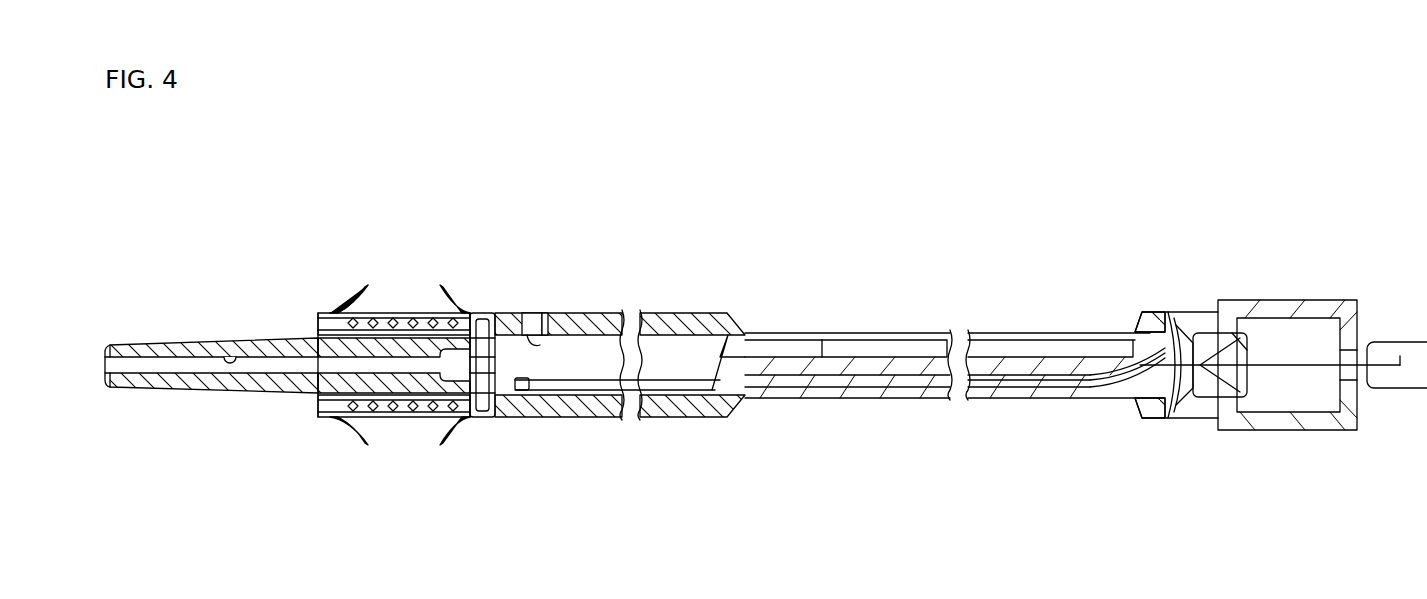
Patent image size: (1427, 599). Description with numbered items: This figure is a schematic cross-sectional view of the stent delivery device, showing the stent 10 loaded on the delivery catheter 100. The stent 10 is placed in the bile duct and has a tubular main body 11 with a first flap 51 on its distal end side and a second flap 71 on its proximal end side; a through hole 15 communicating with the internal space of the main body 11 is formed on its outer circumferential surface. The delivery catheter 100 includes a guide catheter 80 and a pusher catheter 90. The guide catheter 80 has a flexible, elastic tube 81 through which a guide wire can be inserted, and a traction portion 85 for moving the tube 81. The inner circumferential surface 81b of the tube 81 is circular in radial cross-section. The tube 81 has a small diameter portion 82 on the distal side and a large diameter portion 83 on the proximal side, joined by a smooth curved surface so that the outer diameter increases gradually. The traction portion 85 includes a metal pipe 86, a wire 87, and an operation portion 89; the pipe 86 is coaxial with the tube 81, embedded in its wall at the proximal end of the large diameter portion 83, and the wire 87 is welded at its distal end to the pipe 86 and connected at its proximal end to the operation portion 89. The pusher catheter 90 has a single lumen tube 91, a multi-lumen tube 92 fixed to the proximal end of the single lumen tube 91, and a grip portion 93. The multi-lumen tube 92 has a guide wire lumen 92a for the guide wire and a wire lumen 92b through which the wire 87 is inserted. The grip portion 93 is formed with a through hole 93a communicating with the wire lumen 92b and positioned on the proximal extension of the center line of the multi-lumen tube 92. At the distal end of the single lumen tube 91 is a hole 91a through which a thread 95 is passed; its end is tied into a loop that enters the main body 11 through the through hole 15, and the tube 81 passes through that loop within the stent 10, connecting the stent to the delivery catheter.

The delivery catheter 100 is at (852, 281).
The stent 10 is at (430, 443).
The main body 11 is at (404, 312).
The through hole 15 is at (477, 298).
The first flap 51 is at (345, 300).
The second flap 71 is at (462, 286).
The guide catheter 80 is at (170, 420).
The tube 81 is at (166, 344).
The inner circumferential surface 81b is at (233, 352).
The small diameter portion 82 is at (232, 398).
The large diameter portion 83 is at (386, 418).
The pipe 86 is at (426, 420).
The wire 87 is at (598, 398).
The pusher catheter 90 is at (750, 416).
The single lumen tube 91 is at (668, 314).
The hole 91a is at (548, 318).
The multi-lumen tube 92 is at (1013, 332).
The guide wire lumen 92a is at (782, 342).
The wire lumen 92b is at (870, 385).
The grip portion 93 is at (1285, 300).
The through hole 93a is at (1365, 350).
The thread 95 is at (538, 340).
The traction portion 85 is at (1297, 376).
The operation portion 89 is at (1393, 390).